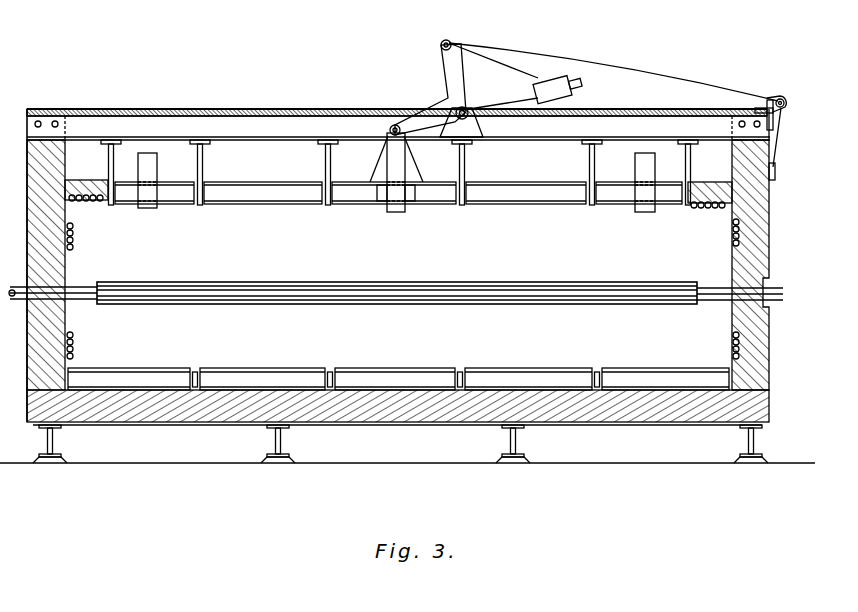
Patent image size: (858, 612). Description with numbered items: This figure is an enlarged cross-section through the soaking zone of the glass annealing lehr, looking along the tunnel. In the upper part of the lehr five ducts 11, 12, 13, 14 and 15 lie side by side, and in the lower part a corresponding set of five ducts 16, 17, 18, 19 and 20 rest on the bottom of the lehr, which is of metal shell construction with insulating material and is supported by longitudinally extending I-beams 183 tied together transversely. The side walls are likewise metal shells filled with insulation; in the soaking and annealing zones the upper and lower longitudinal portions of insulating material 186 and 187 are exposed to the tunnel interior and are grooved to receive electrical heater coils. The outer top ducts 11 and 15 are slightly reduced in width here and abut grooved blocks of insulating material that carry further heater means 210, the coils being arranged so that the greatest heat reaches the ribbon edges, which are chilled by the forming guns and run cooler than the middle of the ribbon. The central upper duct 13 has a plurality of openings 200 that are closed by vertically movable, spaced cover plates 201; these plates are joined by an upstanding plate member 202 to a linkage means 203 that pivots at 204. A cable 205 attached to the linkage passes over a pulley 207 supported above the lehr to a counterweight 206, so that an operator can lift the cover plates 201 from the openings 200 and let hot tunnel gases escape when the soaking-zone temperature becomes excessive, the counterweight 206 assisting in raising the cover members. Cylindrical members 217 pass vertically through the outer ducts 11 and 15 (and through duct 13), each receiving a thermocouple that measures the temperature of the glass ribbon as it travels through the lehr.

The duct 11 is at (164, 183).
The duct 12 is at (270, 183).
The duct 13 is at (357, 185).
The duct 14 is at (524, 186).
The duct 15 is at (615, 184).
The duct 16 is at (133, 369).
The duct 17 is at (250, 369).
The duct 18 is at (398, 369).
The duct 19 is at (538, 369).
The duct 20 is at (653, 369).
The I-beam 183 is at (278, 446).
The upper longitudinal portion of insulating material 186 is at (74, 242).
The lower longitudinal portion of insulating material 187 is at (73, 343).
The opening 200 is at (421, 205).
The cover plate 201 is at (437, 183).
The upstanding plate member 202 is at (387, 160).
The linkage means 203 is at (445, 88).
The pivot 204 is at (484, 120).
The cable 205 is at (602, 67).
The counterweight 206 is at (540, 80).
The pulley 207 is at (786, 102).
The heater means 210 is at (100, 204).
The cylindrical member 217 is at (150, 210).